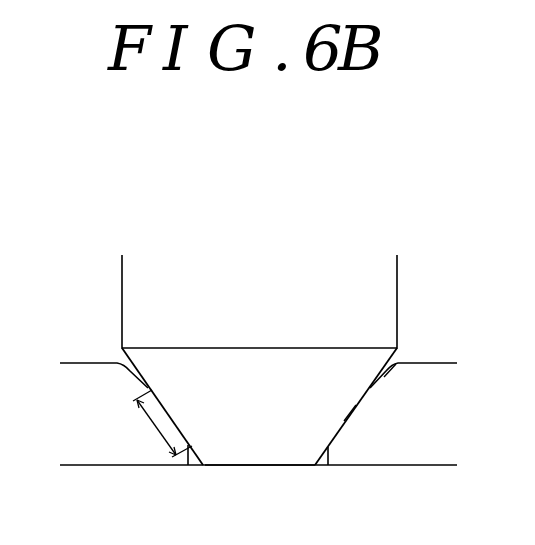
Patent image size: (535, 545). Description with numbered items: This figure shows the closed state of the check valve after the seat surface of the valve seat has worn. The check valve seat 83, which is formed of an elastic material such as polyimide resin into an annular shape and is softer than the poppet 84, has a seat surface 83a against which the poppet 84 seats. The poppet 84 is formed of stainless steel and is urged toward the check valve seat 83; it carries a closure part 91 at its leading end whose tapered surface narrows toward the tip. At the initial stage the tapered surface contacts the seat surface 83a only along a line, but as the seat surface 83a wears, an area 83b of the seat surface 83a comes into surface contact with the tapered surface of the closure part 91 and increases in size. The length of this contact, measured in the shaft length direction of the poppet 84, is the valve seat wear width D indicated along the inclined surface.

The poppet 84 is at (396, 301).
The check valve seat 83 is at (441, 362).
The seat surface 83a is at (383, 371).
The area of the seat surface in surface contact with the tapered surface 83b is at (344, 417).
The closure part 91 is at (257, 465).
The valve seat wear width D is at (159, 423).